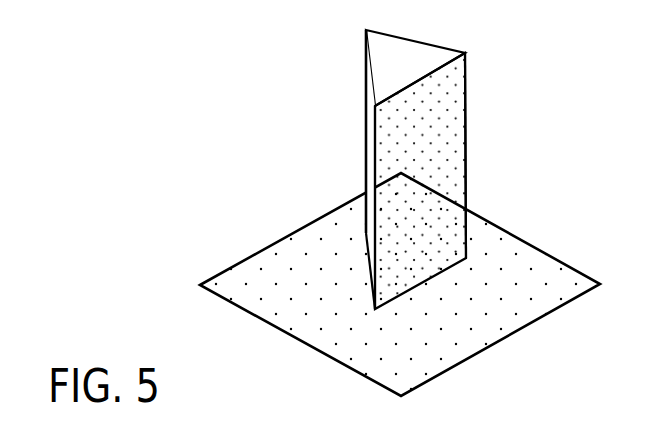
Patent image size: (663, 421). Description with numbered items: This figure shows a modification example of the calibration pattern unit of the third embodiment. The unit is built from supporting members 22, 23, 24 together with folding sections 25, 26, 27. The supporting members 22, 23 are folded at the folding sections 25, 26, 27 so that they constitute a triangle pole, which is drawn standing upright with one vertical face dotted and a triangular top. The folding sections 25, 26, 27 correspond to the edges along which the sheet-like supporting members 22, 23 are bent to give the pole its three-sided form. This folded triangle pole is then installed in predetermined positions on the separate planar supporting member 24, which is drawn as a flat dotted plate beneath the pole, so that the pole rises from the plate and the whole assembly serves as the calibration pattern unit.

The supporting member 22 is at (404, 169).
The supporting member 23 is at (435, 146).
The planar supporting member 24 is at (480, 330).
The folding section 25 is at (372, 213).
The folding section 26 is at (467, 183).
The folding section 27 is at (366, 85).